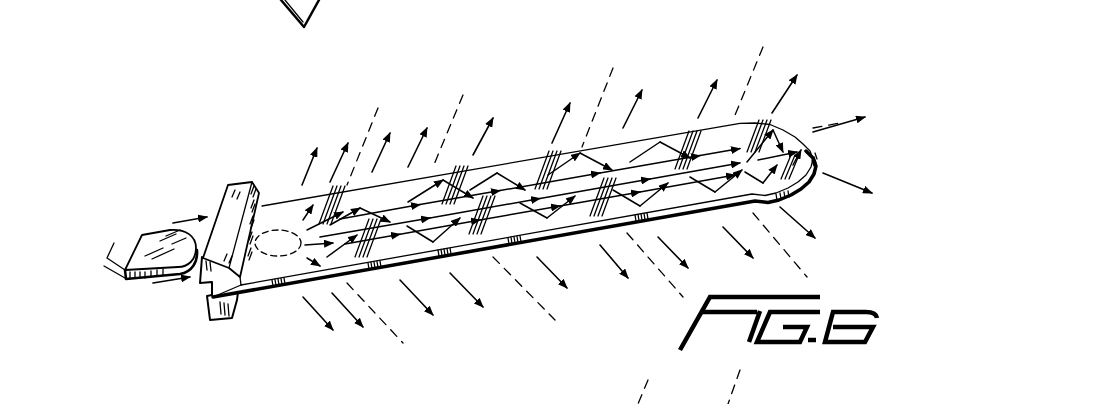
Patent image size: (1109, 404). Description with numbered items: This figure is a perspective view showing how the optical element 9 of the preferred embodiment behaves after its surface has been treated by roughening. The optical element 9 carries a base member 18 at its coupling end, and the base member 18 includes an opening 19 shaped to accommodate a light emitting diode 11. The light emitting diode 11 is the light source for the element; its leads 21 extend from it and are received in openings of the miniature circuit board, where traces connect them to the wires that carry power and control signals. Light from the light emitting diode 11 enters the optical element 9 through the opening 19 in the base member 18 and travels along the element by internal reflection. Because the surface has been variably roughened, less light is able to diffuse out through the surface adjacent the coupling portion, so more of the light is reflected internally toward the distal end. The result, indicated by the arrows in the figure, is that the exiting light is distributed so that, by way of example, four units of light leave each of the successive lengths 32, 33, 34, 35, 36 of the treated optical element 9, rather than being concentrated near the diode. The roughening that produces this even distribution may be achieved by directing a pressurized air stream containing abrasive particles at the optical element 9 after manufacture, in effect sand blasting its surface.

The optical element 9 is at (257, 172).
The light emitting diode 11 is at (167, 230).
The base member 18 is at (217, 323).
The opening 19 is at (282, 228).
The light emitting diode lead 21 is at (93, 287).
The length of the treated optical element 32 is at (340, 119).
The length of the treated optical element 33 is at (420, 92).
The length of the treated optical element 34 is at (570, 70).
The length of the treated optical element 35 is at (668, 65).
The length of the treated optical element 36 is at (797, 63).